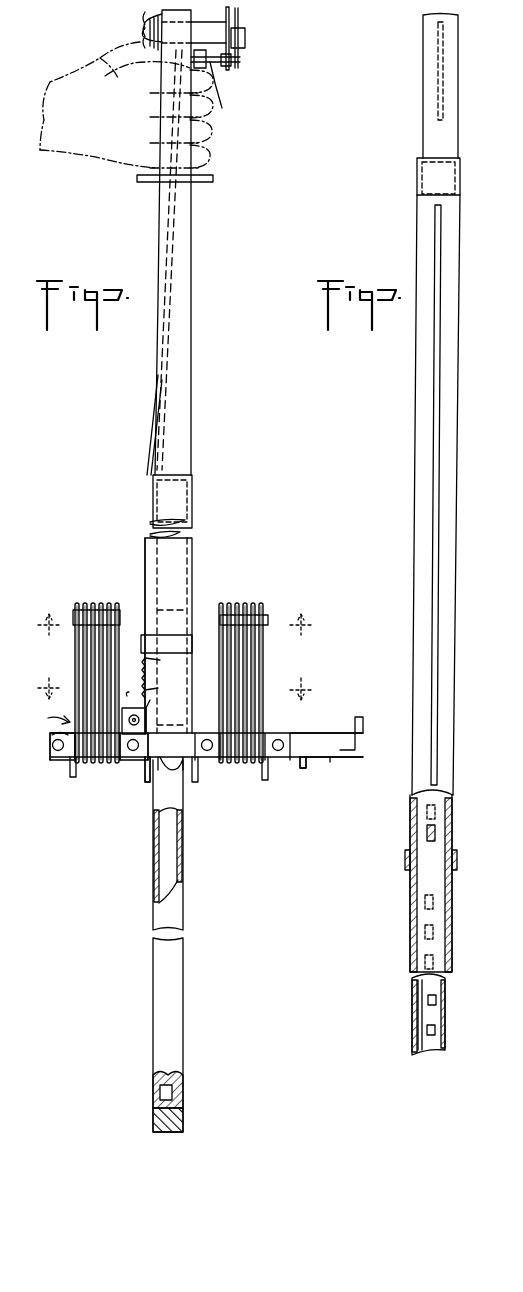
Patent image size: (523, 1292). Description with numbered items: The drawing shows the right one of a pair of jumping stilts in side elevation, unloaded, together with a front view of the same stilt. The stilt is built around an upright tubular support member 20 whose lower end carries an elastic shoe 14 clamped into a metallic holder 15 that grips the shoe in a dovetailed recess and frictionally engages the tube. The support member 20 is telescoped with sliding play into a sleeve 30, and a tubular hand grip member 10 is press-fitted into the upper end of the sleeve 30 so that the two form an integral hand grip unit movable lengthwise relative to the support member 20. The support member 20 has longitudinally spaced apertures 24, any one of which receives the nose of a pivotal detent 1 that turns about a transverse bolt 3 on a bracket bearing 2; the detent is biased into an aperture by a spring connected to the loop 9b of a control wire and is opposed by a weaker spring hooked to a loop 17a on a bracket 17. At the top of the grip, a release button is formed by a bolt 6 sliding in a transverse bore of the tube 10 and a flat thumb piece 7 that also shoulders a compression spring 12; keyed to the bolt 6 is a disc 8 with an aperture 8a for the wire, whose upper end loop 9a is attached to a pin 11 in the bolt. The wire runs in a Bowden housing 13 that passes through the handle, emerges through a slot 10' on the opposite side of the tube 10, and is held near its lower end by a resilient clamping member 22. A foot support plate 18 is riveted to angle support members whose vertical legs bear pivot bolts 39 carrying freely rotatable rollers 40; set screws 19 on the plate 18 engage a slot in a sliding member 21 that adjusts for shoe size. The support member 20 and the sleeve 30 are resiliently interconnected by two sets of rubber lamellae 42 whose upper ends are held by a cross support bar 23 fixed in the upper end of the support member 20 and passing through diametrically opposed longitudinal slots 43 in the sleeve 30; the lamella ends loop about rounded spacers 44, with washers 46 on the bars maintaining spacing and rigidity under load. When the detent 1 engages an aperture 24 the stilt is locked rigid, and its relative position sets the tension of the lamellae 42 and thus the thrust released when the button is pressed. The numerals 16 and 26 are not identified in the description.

In FIG. 1, the pivotal detent 1 is at (150, 700).
In FIG. 1, the bracket bearing 2 is at (120, 767).
In FIG. 1, the transverse bolt 3 is at (139, 722).
In FIG. 1, the bolt 6 is at (214, 28).
In FIG. 1, the thumb piece 7 is at (140, 42).
In FIG. 1, the disc 8 is at (238, 12).
In FIG. 1, the aperture 8a is at (212, 62).
In FIG. 1, the wire end loop 9a is at (231, 60).
In FIG. 1, the loop 9b is at (148, 658).
In FIG. 1, the hand grip member 10 is at (191, 242).
In FIG. 2, the hand grip member 10 is at (459, 86).
In FIG. 2, the slot 10' is at (473, 71).
In FIG. 1, the pin 11 is at (245, 22).
In FIG. 1, the compression spring 12 is at (150, 28).
In FIG. 1, the Bowden housing 13 is at (148, 440).
In FIG. 1, the elastic shoe 14 is at (183, 1122).
In FIG. 1, the metallic holder 15 is at (176, 1100).
In FIG. 1, the cross bracket 16 is at (95, 765).
In FIG. 1, the bracket 17 is at (50, 745).
In FIG. 1, the loop 17a is at (58, 733).
In FIG. 1, the foot support plate 18 is at (335, 715).
In FIG. 1, the set screws 19 is at (303, 768).
In FIG. 1, the tubular support member 20 is at (183, 852).
In FIG. 2, the tubular support member 20 is at (437, 915).
In FIG. 1, the sliding member 21 is at (328, 760).
In FIG. 1, the clamping member 22 is at (198, 645).
In FIG. 1, the cross support bar 23 is at (200, 598).
In FIG. 1, the apertures 24 is at (154, 885).
In FIG. 2, the apertures 24 is at (436, 998).
In FIG. 1, the bolt 26 is at (203, 732).
In FIG. 1, the sleeve 30 is at (192, 505).
In FIG. 2, the sleeve 30 is at (455, 573).
In FIG. 1, the pivot bolts 39 is at (148, 782).
In FIG. 1, the rollers 40 is at (183, 780).
In FIG. 1, the resilient elements 42 is at (275, 658).
In FIG. 2, the longitudinal slots 43 is at (434, 495).
In FIG. 1, the rounded spacers 44 is at (278, 605).
In FIG. 1, the washers 46 is at (264, 762).